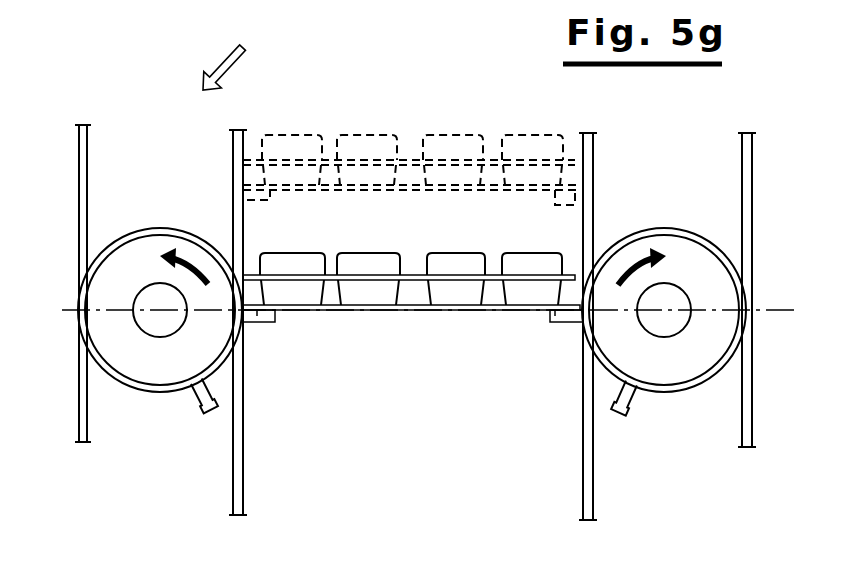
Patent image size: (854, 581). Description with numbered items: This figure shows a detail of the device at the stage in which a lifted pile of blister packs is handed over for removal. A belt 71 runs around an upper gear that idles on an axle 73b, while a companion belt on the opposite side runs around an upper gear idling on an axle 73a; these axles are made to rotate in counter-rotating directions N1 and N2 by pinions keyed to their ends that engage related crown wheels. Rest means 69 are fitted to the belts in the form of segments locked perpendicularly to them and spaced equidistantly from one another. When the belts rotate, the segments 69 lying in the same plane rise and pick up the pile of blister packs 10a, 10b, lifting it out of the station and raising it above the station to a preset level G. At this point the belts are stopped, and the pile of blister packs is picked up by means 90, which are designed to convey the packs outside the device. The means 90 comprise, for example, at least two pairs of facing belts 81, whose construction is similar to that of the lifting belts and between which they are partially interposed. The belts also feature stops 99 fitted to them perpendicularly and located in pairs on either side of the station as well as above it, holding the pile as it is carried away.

The means for conveying blister packs 90 is at (235, 59).
The facing belt 81 is at (232, 149).
The axle 73b is at (160, 274).
The stop 99 is at (203, 412).
The blister pack 10a is at (457, 268).
The blister pack 10b is at (363, 305).
The rest means 69 is at (257, 316).
The belt 71 is at (235, 477).
The axle 73a is at (664, 349).
The rotation direction N1 is at (656, 266).
The rotation direction N2 is at (192, 277).
The preset level G is at (428, 300).